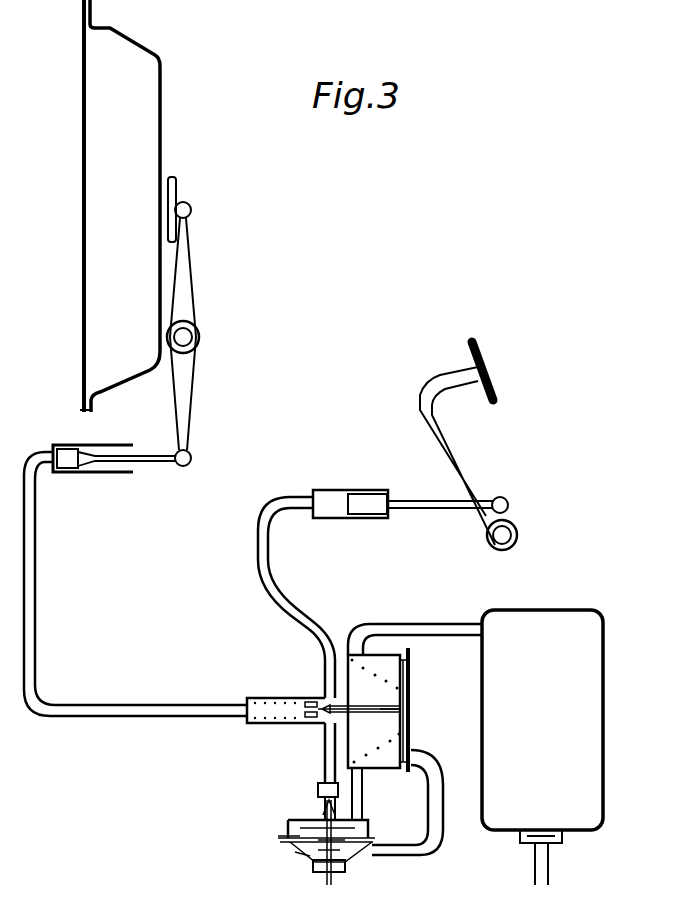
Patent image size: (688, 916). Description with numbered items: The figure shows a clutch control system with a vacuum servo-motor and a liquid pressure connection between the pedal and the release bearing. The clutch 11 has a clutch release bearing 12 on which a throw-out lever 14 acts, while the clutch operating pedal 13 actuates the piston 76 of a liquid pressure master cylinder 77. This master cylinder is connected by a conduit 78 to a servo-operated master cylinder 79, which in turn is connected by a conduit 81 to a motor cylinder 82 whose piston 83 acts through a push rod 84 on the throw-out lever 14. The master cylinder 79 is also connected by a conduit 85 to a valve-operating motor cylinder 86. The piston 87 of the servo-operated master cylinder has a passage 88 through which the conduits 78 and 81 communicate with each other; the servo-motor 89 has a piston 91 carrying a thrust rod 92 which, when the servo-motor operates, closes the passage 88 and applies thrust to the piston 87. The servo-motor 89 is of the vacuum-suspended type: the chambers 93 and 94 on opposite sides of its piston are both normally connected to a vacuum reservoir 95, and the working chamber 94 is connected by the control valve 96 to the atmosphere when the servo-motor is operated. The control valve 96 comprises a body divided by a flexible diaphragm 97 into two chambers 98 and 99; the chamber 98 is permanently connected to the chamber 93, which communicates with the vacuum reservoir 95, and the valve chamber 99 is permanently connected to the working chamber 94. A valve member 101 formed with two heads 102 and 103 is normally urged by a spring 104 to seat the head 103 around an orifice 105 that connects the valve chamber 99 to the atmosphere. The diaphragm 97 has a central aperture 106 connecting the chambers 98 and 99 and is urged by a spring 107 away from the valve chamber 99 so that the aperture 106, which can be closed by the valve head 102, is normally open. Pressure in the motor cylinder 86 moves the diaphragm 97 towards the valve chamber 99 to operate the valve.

The clutch 11 is at (120, 206).
The clutch release bearing 12 is at (178, 193).
The clutch operating pedal 13 is at (442, 375).
The throw-out lever 14 is at (186, 300).
The piston 76 is at (366, 500).
The liquid pressure master cylinder 77 is at (327, 490).
The conduit 78 is at (258, 545).
The servo-operated master cylinder 79 is at (247, 695).
The conduit 81 is at (34, 618).
The motor cylinder 82 is at (110, 474).
The piston 83 is at (68, 463).
The push rod 84 is at (155, 462).
The conduit 85 is at (327, 740).
The valve-operating motor cylinder 86 is at (318, 790).
The piston 87 is at (310, 700).
The passage 88 is at (286, 695).
The servo-motor 89 is at (385, 655).
The piston 91 is at (404, 690).
The thrust rod 92 is at (404, 718).
The chamber 93 is at (363, 678).
The working chamber 94 is at (412, 668).
The vacuum reservoir 95 is at (542, 747).
The control valve 96 is at (274, 826).
The flexible diaphragm 97 is at (375, 830).
The chamber 98 is at (305, 810).
The valve chamber 99 is at (285, 843).
The valve member 101 is at (350, 860).
The valve head 102 is at (355, 840).
The valve head 103 is at (332, 870).
The spring 104 is at (325, 860).
The orifice 105 is at (318, 872).
The aperture 106 is at (365, 815).
The spring 107 is at (295, 855).